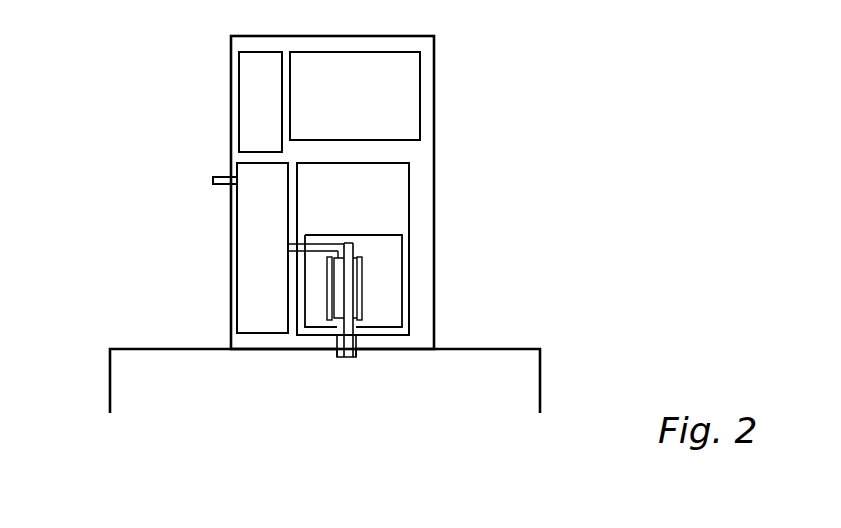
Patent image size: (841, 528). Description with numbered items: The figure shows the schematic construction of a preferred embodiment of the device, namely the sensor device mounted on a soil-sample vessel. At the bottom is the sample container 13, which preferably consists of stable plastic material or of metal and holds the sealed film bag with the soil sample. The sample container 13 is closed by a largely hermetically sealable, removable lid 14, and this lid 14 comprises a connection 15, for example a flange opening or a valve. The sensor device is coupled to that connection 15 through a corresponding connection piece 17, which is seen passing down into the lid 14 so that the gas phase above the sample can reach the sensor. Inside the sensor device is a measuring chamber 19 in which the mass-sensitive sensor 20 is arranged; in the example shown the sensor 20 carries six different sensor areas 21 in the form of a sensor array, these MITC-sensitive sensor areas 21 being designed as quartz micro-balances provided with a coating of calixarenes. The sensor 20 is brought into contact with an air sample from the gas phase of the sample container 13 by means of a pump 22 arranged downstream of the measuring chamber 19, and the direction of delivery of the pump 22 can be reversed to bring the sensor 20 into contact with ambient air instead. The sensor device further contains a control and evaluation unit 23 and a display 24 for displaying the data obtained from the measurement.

The sample container 13 is at (579, 346).
The lid 14 is at (108, 363).
The connection 15 is at (358, 352).
The connection piece 17 is at (337, 347).
The measuring chamber 19 is at (390, 247).
The mass-sensitive sensor 20 is at (363, 277).
The sensor areas 21 is at (355, 292).
The pump 22 is at (250, 278).
The control and evaluation unit 23 is at (255, 93).
The display 24 is at (395, 88).